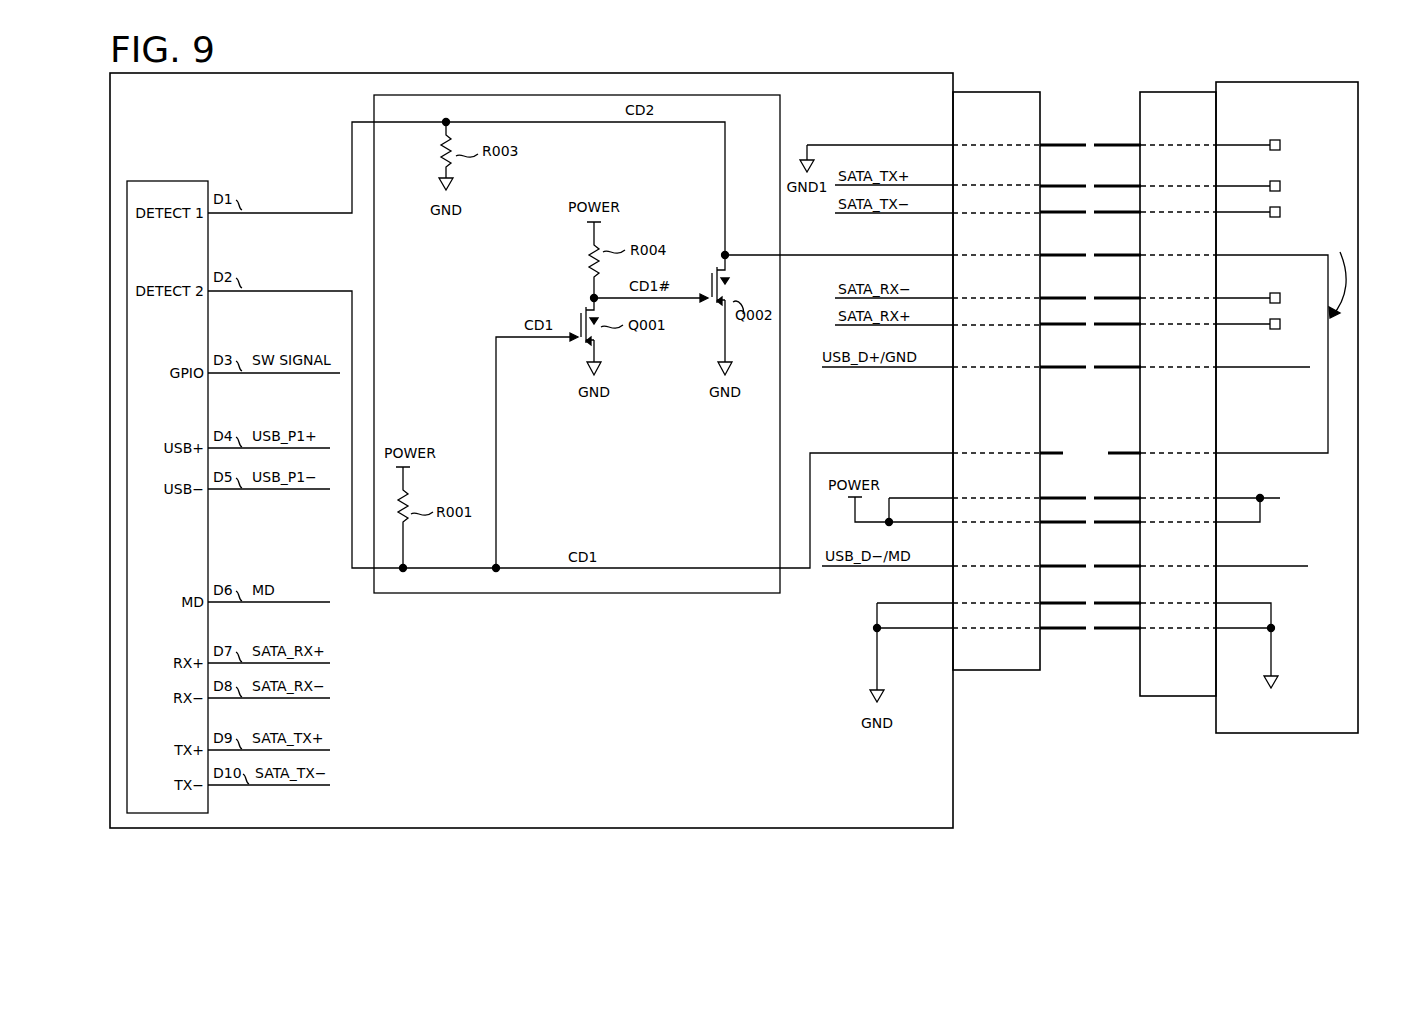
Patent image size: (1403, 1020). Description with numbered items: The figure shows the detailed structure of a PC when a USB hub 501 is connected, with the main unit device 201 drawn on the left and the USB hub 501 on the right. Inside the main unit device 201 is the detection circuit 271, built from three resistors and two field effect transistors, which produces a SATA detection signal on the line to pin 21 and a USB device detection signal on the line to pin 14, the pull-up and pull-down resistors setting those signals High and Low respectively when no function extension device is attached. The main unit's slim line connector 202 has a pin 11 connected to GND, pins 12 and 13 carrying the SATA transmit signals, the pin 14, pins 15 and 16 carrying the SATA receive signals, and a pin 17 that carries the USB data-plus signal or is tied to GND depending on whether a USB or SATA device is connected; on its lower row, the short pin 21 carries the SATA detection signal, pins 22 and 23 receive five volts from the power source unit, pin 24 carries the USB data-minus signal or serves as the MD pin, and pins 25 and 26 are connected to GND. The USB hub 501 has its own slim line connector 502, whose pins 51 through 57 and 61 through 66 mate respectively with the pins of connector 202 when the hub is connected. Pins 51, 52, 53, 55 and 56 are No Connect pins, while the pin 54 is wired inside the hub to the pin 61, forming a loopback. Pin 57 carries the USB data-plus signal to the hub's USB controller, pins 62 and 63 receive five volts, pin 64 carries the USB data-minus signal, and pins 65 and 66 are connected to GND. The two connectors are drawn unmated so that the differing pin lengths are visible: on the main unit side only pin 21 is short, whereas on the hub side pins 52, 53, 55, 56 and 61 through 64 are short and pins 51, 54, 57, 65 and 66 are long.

The main unit device 201 is at (278, 73).
The detection circuit 271 is at (781, 97).
The slim line connector 202 is at (991, 92).
The slim line connector 502 is at (1181, 92).
The USB hub 501 is at (1264, 82).
The pin 11 is at (1052, 145).
The pin 12 is at (1052, 186).
The pin 13 is at (1071, 214).
The pin 14 is at (1059, 255).
The pin 15 is at (1052, 298).
The pin 16 is at (1054, 324).
The pin 17 is at (1054, 367).
The pin 21 is at (1049, 453).
The pin 22 is at (1052, 498).
The pin 23 is at (1071, 524).
The pin 24 is at (1057, 566).
The pin 25 is at (1052, 603).
The pin 26 is at (1054, 630).
The pin 51 is at (1129, 145).
The pin 52 is at (1129, 186).
The pin 53 is at (1122, 214).
The pin 54 is at (1107, 255).
The pin 55 is at (1129, 298).
The pin 56 is at (1129, 324).
The pin 57 is at (1129, 367).
The pin 61 is at (1129, 453).
The pin 62 is at (1129, 498).
The pin 63 is at (1116, 524).
The pin 64 is at (1139, 566).
The pin 65 is at (1129, 603).
The pin 66 is at (1129, 630).